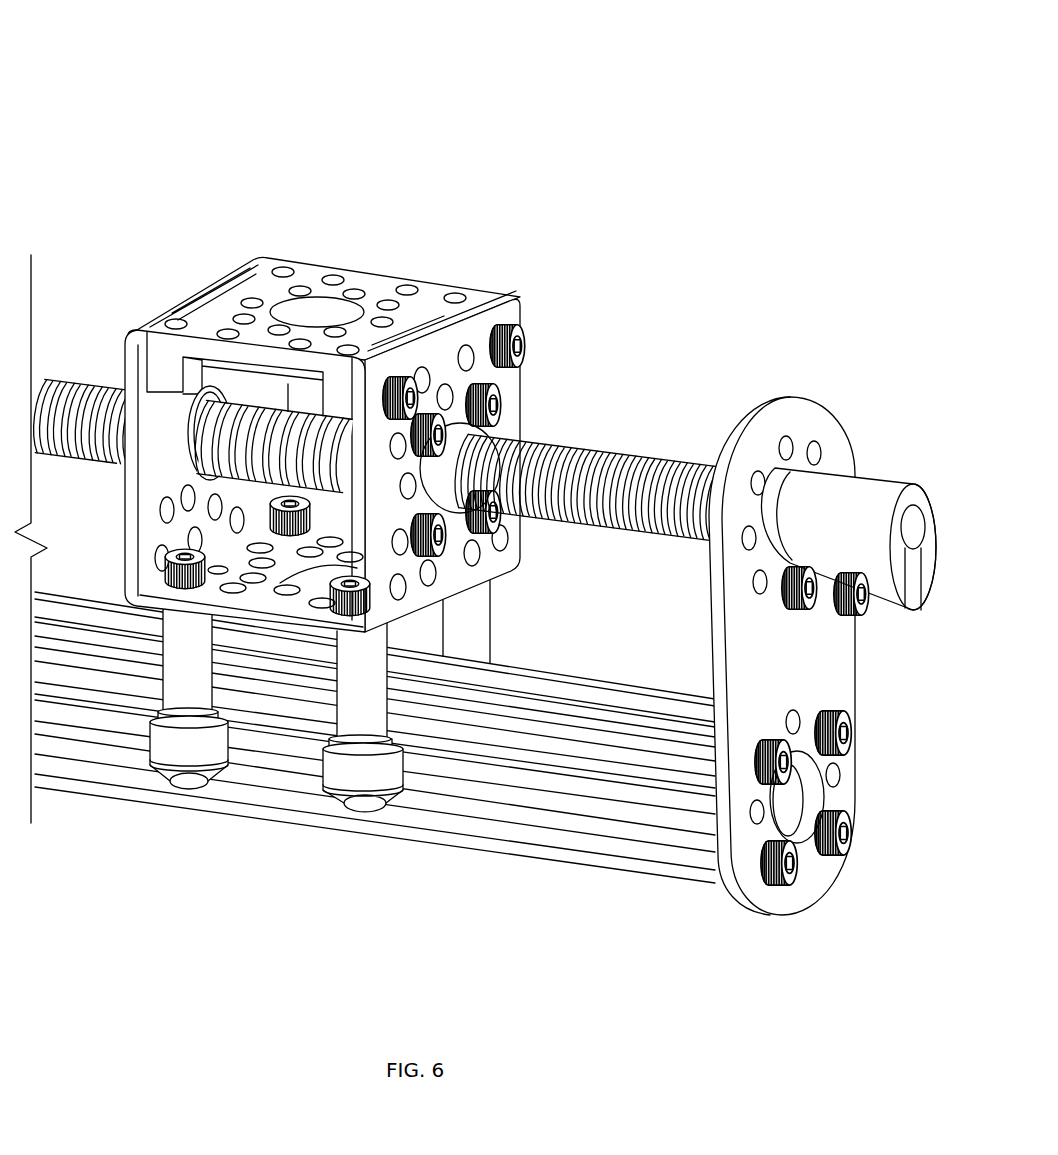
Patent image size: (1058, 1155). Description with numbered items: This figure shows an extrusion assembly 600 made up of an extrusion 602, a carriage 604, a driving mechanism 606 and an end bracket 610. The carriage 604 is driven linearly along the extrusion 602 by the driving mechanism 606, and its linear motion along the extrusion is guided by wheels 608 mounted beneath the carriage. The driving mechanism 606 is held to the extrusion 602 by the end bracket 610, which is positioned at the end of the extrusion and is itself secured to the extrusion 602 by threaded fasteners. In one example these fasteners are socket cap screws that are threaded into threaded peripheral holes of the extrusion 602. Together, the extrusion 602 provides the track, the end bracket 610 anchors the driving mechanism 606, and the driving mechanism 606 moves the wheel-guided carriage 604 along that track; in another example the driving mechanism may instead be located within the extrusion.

The assembly 600 is at (475, 489).
The extrusion 602 is at (673, 848).
The carriage 604 is at (538, 317).
The driving mechanism 606 is at (856, 505).
The wheels 608 is at (343, 782).
The end bracket 610 is at (822, 656).